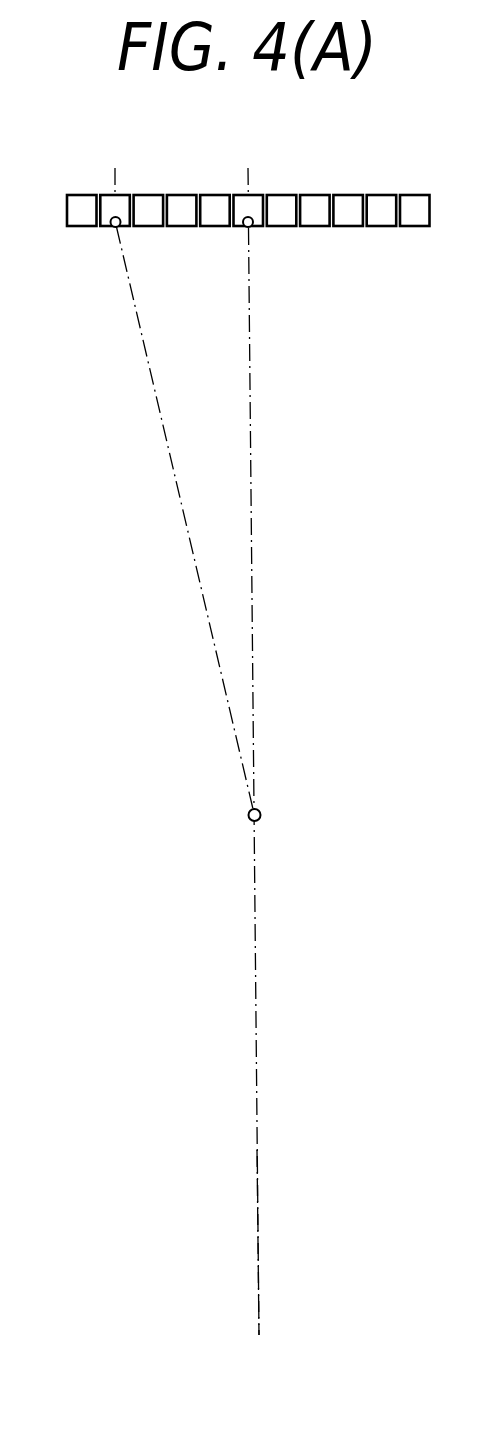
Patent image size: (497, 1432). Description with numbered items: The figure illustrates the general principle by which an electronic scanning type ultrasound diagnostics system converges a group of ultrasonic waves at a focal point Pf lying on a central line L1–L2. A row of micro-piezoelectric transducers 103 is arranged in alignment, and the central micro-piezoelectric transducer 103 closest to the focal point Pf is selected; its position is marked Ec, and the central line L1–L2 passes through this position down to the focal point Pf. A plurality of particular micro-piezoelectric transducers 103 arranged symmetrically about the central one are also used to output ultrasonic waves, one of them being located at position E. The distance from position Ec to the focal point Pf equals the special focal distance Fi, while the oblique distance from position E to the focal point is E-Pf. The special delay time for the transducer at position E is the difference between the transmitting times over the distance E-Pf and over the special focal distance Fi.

The micro-piezoelectric transducer 103 is at (345, 193).
The position of particular micro-piezoelectric transducer E is at (112, 227).
The position of central micro-piezoelectric transducer Ec is at (245, 227).
The focal point Pf is at (248, 820).
The central line L1 is at (248, 733).
The central line L2 is at (266, 1264).
The distance from position E to focal point E-Pf is at (158, 568).
The special focal distance Fi is at (337, 587).